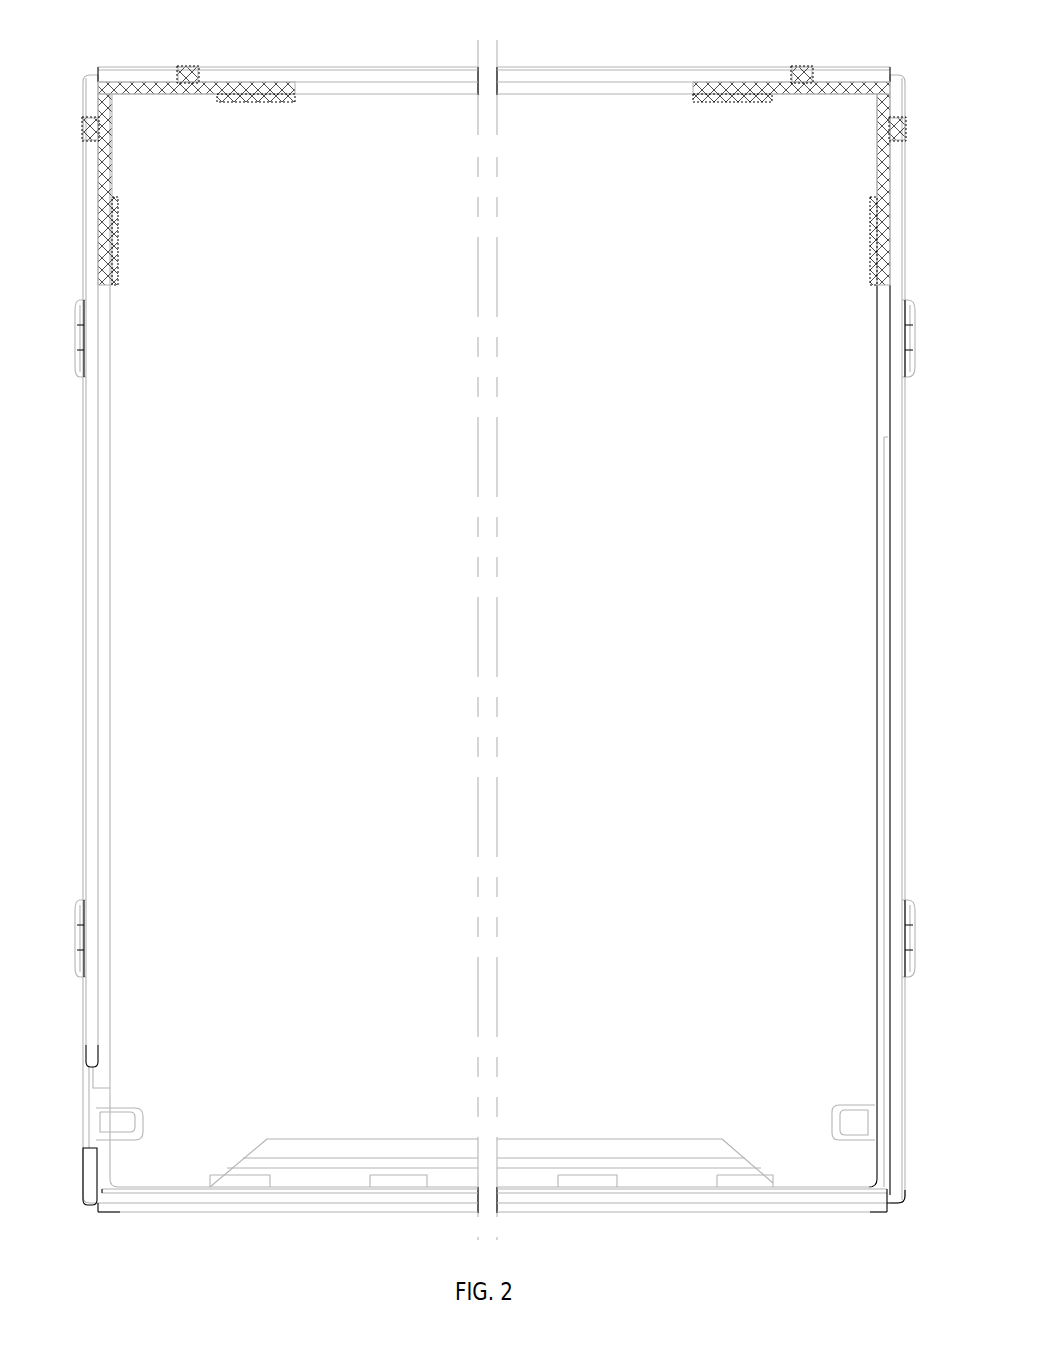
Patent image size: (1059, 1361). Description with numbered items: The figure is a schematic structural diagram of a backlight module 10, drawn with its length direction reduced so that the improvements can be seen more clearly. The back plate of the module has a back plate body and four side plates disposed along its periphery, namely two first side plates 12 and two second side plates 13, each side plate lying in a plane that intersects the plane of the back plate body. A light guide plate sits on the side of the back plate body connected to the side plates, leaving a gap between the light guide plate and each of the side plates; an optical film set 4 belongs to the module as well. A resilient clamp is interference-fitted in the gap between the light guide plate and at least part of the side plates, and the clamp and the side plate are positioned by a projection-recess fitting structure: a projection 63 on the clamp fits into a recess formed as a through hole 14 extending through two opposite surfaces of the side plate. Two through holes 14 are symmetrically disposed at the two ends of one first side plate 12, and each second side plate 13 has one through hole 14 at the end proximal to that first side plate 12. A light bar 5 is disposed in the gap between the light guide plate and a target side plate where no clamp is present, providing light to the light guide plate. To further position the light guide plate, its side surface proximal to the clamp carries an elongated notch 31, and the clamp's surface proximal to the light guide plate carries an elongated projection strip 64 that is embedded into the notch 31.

The backlight module 10 is at (76, 51).
The first side plate 12 is at (401, 72).
The second side plate 13 is at (92, 222).
The through hole 14 is at (178, 72).
The optical film set 4 is at (596, 133).
The light bar 5 is at (248, 1183).
The notch 31 is at (118, 232).
The projection 63 is at (190, 76).
The projection strip 64 is at (257, 94).